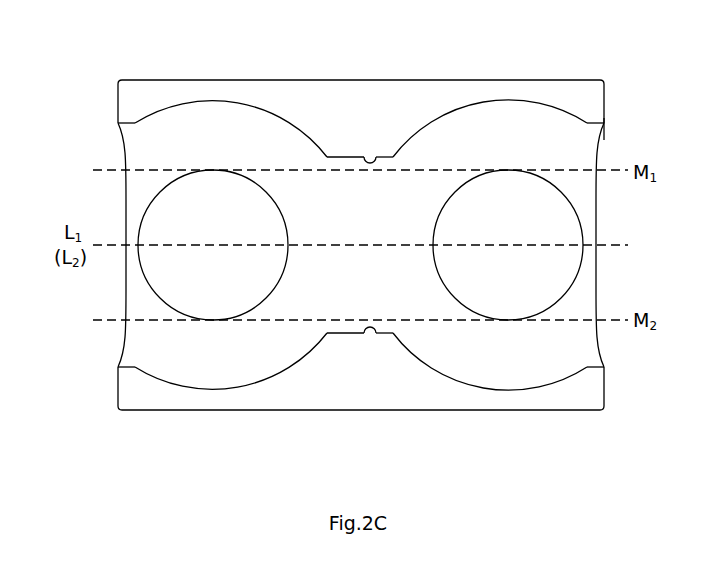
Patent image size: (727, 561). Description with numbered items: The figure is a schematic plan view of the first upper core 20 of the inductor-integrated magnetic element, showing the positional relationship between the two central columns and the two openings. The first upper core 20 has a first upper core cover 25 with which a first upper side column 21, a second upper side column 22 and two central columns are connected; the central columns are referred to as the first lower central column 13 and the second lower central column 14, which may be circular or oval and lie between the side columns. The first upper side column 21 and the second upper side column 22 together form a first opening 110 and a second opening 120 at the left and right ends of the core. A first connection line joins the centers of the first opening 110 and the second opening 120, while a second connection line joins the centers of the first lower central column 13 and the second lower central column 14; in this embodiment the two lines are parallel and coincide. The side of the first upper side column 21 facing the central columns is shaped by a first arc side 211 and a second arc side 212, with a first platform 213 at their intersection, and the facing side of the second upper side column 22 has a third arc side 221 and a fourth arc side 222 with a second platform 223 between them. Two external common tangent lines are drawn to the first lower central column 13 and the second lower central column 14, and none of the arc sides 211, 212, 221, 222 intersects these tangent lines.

The first upper core 20 is at (100, 70).
The first upper side column 21 is at (324, 107).
The first arc side 211 is at (211, 106).
The second arc side 212 is at (490, 113).
The first platform 213 is at (378, 157).
The second upper side column 22 is at (329, 381).
The third arc side 221 is at (211, 385).
The fourth arc side 222 is at (490, 376).
The second platform 223 is at (375, 333).
The first upper core cover 25 is at (577, 145).
The first lower central column 13 is at (227, 239).
The second lower central column 14 is at (522, 237).
The first opening 110 is at (114, 297).
The second opening 120 is at (608, 300).